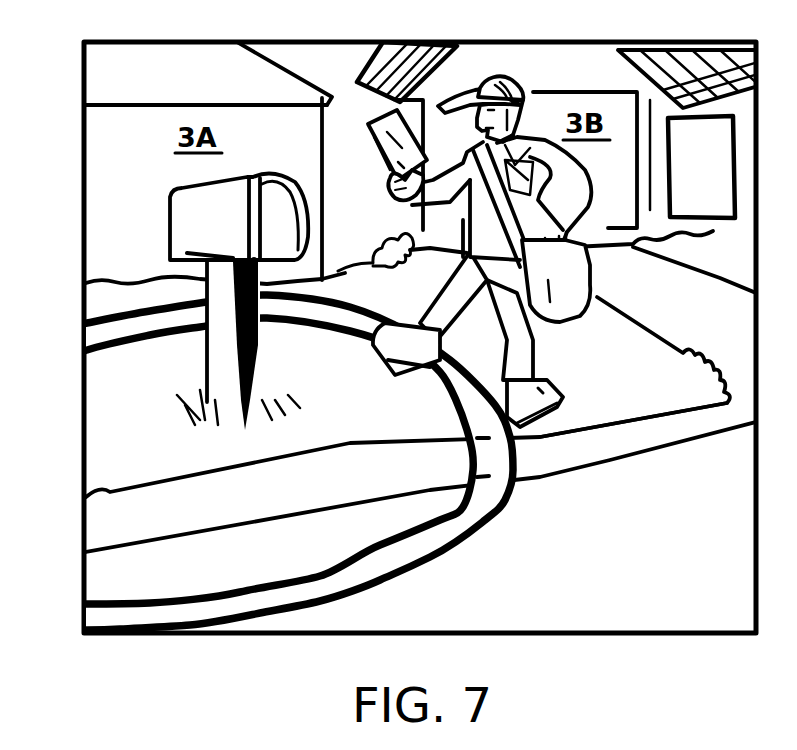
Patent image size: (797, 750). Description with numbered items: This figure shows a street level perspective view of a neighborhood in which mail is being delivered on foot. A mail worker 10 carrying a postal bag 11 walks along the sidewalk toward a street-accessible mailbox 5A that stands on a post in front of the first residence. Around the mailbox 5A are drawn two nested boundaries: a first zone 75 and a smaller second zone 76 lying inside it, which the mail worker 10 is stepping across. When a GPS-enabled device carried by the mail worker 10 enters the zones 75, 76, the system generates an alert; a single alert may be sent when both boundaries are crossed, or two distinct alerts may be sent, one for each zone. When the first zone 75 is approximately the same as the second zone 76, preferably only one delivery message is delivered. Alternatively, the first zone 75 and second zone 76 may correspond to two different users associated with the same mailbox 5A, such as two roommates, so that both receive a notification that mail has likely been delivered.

The mailbox 5A is at (170, 210).
The mail worker 10 is at (520, 357).
The postal bag 11 is at (597, 278).
The first zone 75 is at (470, 523).
The second zone 76 is at (367, 552).